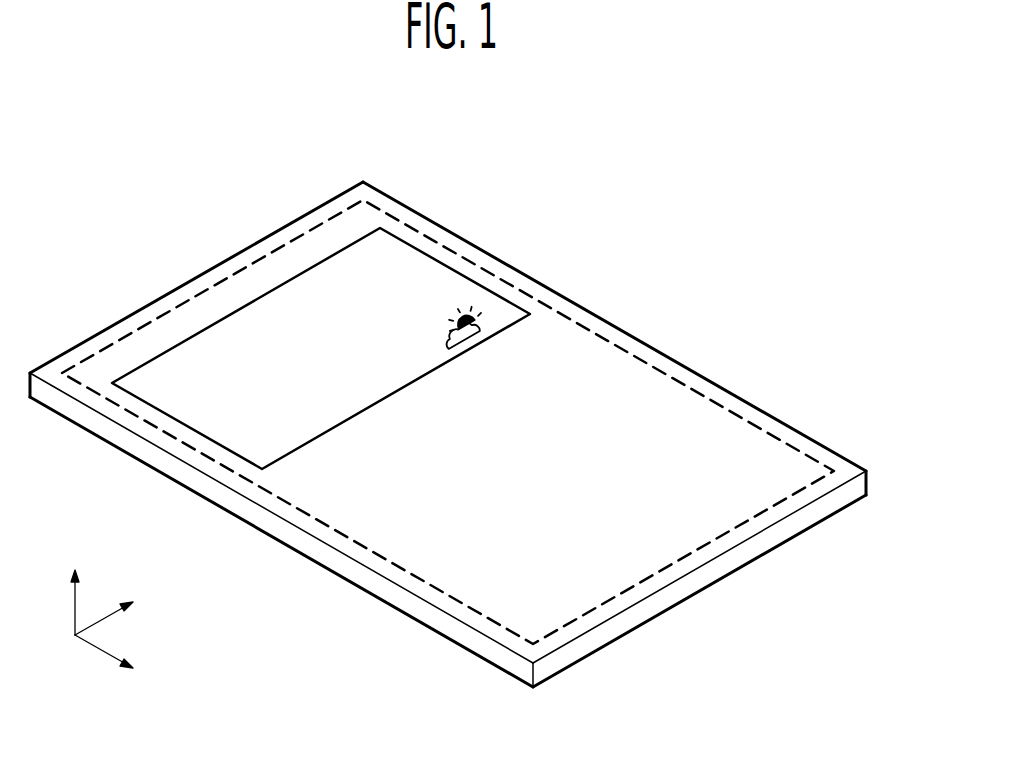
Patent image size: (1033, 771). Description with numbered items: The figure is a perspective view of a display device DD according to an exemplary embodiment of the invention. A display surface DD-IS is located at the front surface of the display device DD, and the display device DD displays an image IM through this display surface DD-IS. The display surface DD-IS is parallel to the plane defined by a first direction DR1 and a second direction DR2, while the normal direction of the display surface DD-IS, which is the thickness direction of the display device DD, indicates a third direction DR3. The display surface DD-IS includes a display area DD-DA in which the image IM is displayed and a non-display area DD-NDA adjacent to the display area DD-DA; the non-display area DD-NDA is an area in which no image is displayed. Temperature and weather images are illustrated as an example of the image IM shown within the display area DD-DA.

The display device DD is at (448, 426).
The display surface DD-IS is at (448, 414).
The display area DD-DA is at (250, 283).
The non-display area DD-NDA is at (166, 309).
The image IM is at (453, 272).
The first direction DR1 is at (124, 661).
The second direction DR2 is at (124, 614).
The third direction DR3 is at (75, 587).